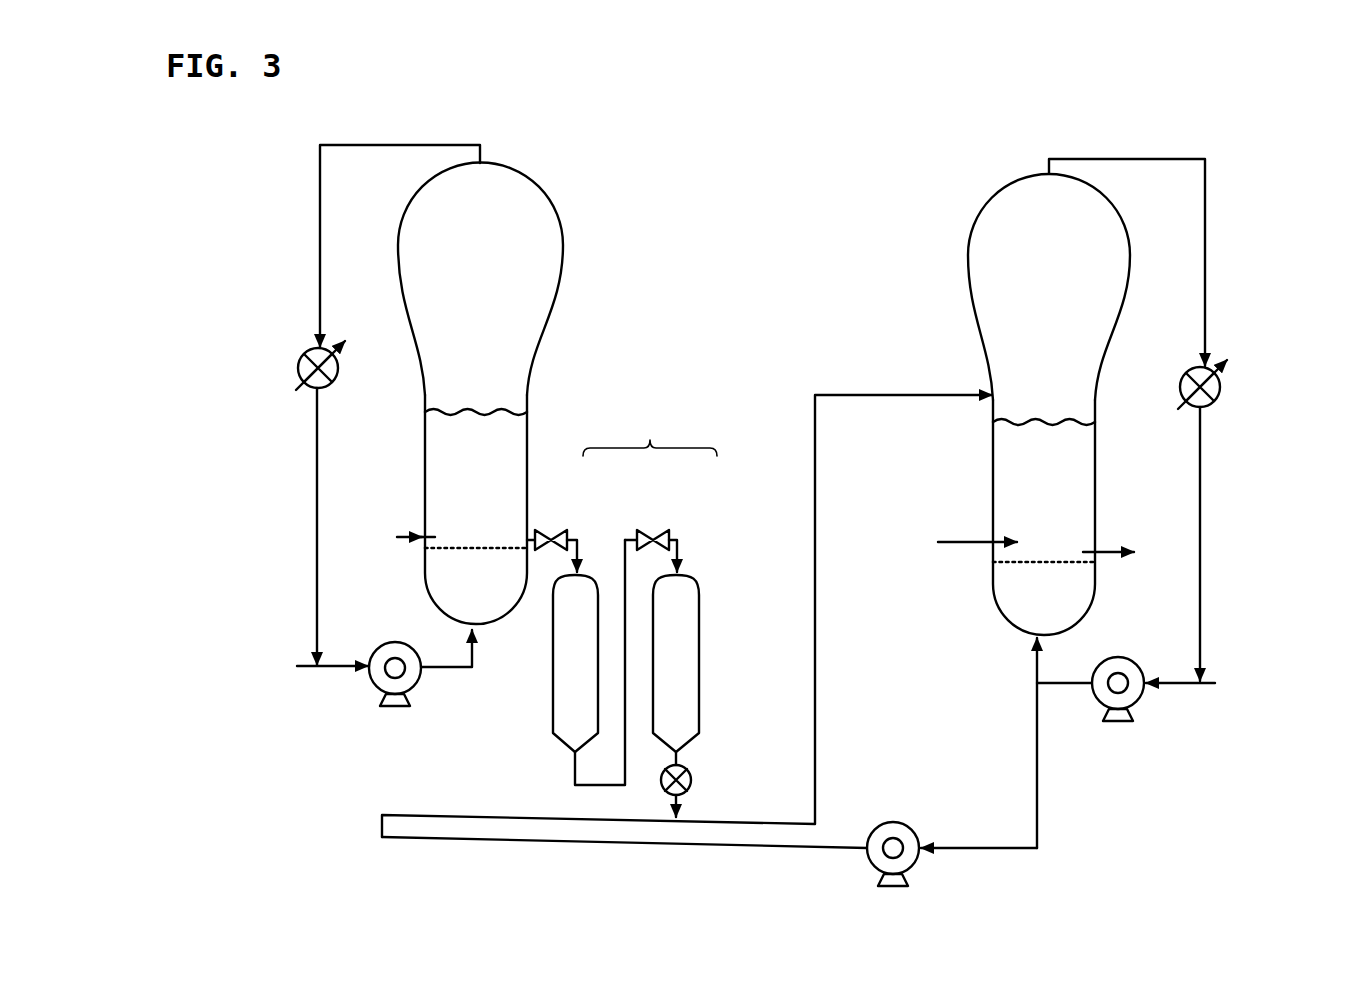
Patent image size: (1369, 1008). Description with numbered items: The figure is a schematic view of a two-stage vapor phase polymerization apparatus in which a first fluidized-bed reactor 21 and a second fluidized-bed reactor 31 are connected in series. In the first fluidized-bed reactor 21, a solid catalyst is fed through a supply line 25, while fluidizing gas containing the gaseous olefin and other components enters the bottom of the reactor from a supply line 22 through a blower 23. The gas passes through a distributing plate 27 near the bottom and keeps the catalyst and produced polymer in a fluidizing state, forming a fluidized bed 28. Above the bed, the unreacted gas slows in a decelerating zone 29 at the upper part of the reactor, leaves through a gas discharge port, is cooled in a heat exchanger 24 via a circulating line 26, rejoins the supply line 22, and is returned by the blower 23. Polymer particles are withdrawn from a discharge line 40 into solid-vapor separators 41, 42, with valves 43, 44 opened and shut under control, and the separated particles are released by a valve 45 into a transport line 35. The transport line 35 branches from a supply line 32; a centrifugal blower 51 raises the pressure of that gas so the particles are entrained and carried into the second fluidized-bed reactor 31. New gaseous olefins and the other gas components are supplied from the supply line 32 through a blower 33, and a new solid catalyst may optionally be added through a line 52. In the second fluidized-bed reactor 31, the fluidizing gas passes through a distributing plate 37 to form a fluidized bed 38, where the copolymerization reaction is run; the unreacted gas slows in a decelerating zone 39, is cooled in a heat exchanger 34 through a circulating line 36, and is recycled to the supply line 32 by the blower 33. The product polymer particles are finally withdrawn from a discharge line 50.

The first fluidized-bed reactor 21 is at (543, 390).
The supply line 22 is at (330, 672).
The blower 23 is at (392, 707).
The heat exchanger (cooling unit) 24 is at (300, 362).
The supply line 25 is at (397, 535).
The circulating line 26 is at (316, 482).
The distributing plate 27 is at (445, 560).
The fluidized bed 28 is at (505, 460).
The decelerating zone 29 is at (530, 272).
The second fluidized-bed reactor 31 is at (980, 393).
The supply line 32 is at (1180, 688).
The blower 33 is at (1122, 720).
The heat exchanger (cooling unit) 34 is at (1230, 378).
The transport line 35 is at (822, 590).
The circulating line 36 is at (1203, 530).
The distributing plate 37 is at (993, 542).
The fluidized bed 38 is at (1013, 465).
The decelerating zone 39 is at (993, 283).
The discharge line 40 is at (622, 489).
The solid-vapor separator 41 is at (553, 690).
The solid-vapor separator 42 is at (699, 710).
The valve 43 is at (560, 535).
The valve 44 is at (660, 535).
The valve 45 is at (691, 780).
The discharge line 50 is at (1100, 555).
The centrifugal blower 51 is at (885, 822).
The line 52 is at (985, 548).